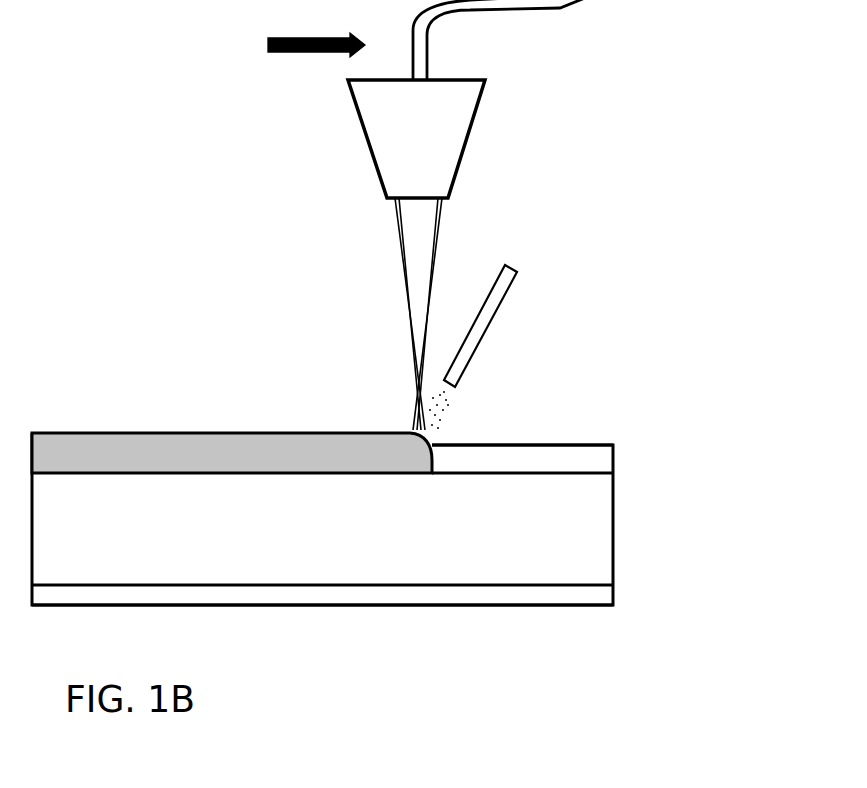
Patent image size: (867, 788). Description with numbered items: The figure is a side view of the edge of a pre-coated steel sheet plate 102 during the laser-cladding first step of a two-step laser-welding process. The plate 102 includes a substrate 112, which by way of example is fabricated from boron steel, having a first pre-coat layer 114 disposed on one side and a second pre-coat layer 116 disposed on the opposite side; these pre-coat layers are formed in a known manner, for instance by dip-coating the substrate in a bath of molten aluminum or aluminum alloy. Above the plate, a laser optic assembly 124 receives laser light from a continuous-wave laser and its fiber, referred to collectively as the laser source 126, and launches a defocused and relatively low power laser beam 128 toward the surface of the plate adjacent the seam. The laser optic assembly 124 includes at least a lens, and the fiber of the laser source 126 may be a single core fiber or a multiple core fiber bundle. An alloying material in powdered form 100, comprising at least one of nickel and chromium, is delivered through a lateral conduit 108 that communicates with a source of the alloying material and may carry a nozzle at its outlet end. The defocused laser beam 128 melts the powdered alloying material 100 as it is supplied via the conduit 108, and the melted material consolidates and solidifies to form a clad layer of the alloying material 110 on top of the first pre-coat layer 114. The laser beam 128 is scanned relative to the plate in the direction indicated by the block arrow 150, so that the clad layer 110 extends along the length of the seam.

The alloying material in powdered form 100 is at (437, 418).
The pre-coated steel sheet plate 102 is at (132, 392).
The lateral conduit 108 is at (483, 338).
The clad layer of the alloying material 110 is at (205, 450).
The substrate 112 is at (593, 558).
The first pre-coat layer 114 is at (582, 458).
The second pre-coat layer 116 is at (613, 592).
The laser optic assembly 124 is at (450, 148).
The laser source 126 is at (613, 0).
The laser beam 128 is at (417, 263).
The block arrow 150 is at (287, 53).